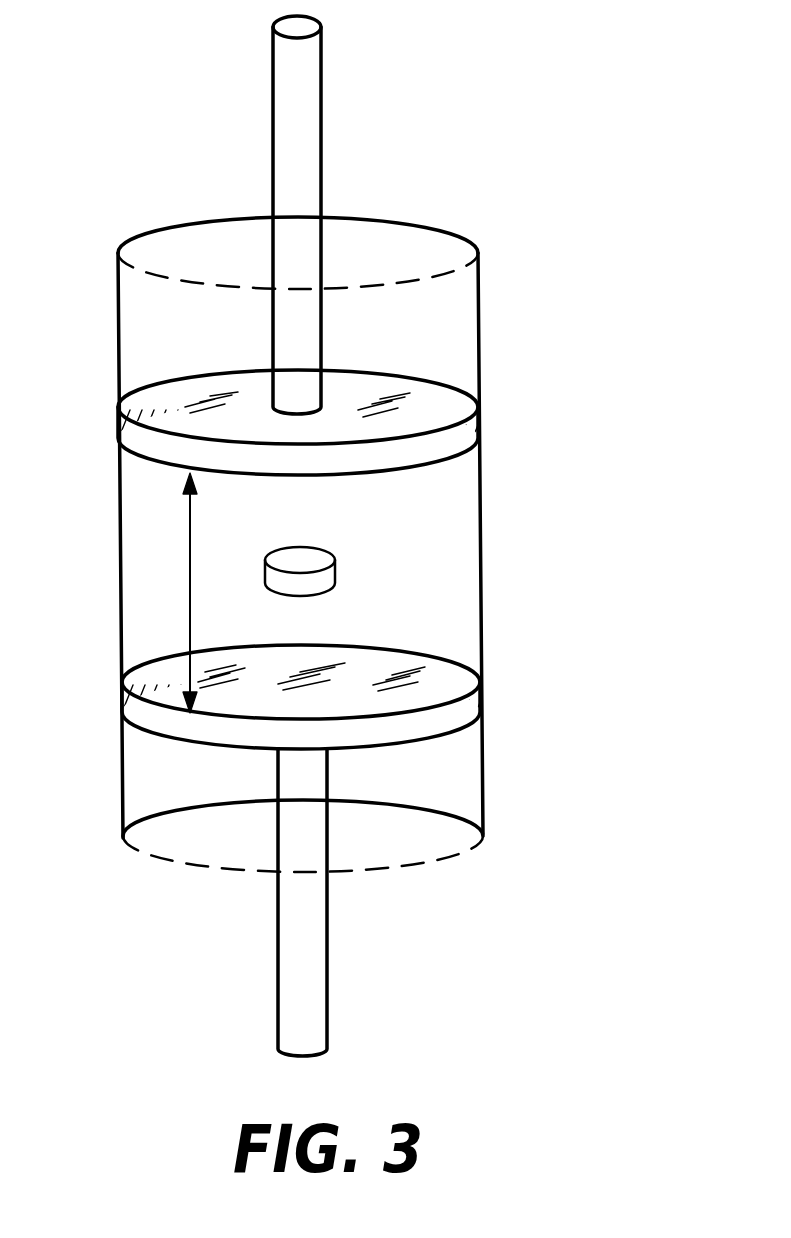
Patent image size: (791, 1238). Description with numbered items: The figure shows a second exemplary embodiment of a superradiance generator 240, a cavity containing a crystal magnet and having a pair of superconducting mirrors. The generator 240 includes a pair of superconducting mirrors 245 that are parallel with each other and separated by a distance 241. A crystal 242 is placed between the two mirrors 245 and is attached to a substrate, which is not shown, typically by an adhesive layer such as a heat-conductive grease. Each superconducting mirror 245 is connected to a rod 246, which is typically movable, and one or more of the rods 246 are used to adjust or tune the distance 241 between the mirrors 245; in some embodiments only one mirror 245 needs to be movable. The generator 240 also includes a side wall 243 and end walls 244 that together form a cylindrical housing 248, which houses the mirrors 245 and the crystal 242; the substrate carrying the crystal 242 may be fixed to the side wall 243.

The superradiance generator 240 is at (577, 114).
The distance 241 is at (190, 550).
The crystal 242 is at (323, 557).
The side wall 243 is at (118, 640).
The end walls 244 is at (430, 240).
The superconducting mirrors 245 is at (480, 430).
The rod 246 is at (322, 158).
The housing 248 is at (481, 560).